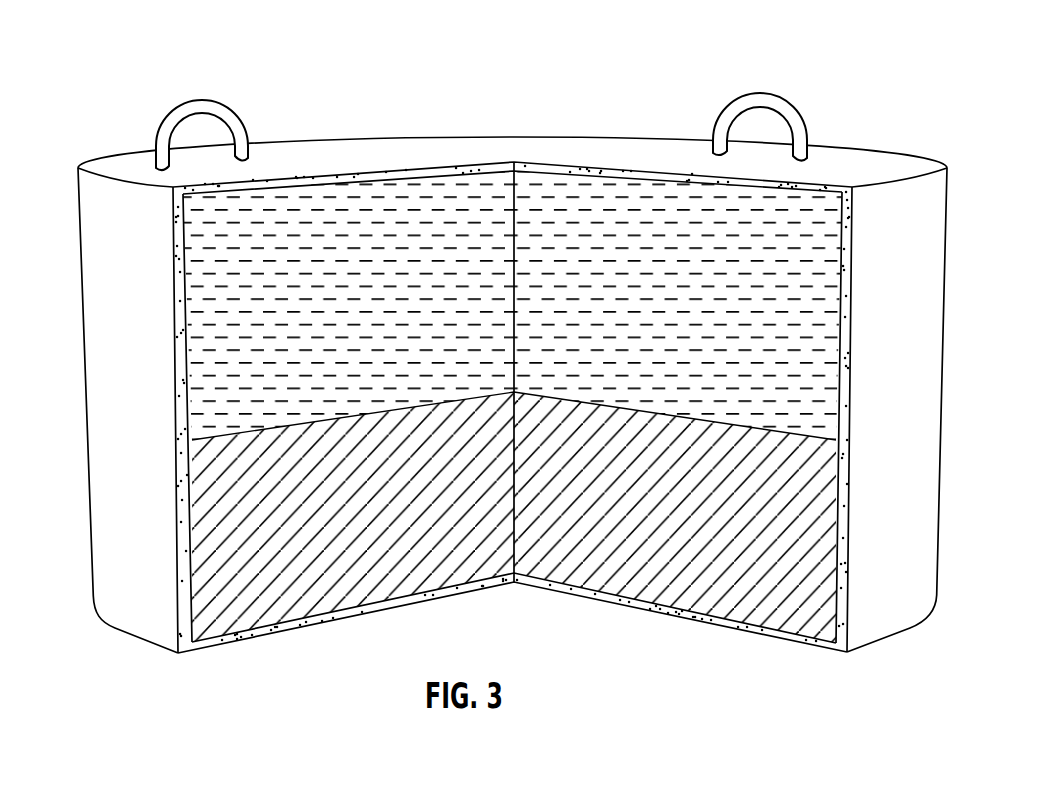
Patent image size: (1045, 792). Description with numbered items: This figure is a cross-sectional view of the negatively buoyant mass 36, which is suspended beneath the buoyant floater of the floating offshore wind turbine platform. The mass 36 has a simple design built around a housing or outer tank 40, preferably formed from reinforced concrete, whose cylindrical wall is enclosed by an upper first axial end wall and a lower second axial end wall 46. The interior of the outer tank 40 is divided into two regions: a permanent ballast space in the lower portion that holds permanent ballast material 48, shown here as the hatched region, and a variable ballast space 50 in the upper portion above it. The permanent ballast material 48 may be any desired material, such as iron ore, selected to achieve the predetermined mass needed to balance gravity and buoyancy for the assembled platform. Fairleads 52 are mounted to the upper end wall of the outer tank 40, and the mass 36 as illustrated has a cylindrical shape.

The negatively buoyant mass 36 is at (489, 354).
The outer tank 40 is at (100, 489).
The second axial end wall 46 is at (143, 644).
The permanent ballast material 48 is at (335, 596).
The variable ballast space 50 is at (330, 202).
The fairleads 52 is at (205, 107).